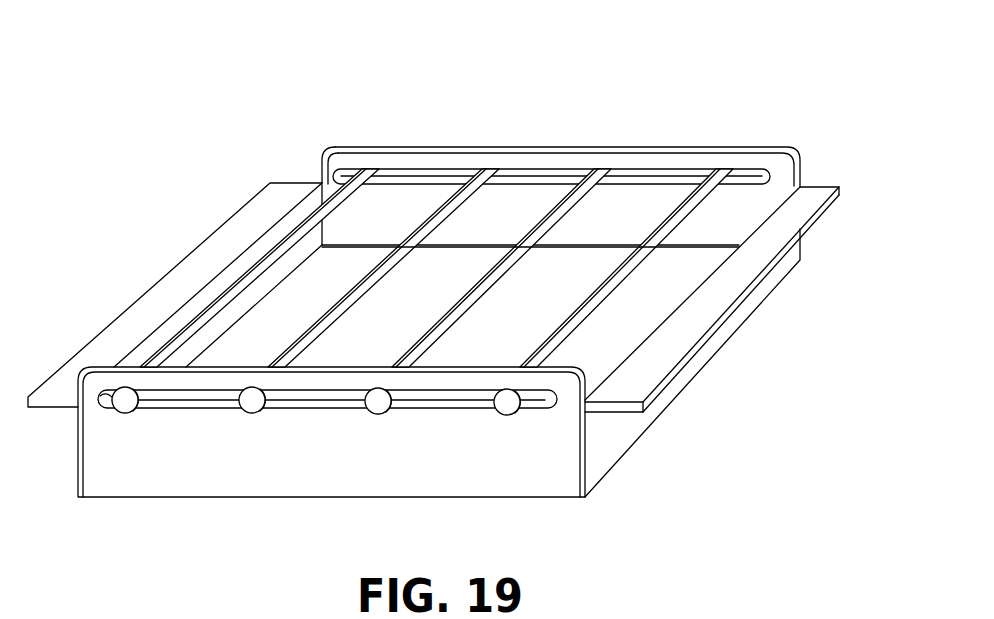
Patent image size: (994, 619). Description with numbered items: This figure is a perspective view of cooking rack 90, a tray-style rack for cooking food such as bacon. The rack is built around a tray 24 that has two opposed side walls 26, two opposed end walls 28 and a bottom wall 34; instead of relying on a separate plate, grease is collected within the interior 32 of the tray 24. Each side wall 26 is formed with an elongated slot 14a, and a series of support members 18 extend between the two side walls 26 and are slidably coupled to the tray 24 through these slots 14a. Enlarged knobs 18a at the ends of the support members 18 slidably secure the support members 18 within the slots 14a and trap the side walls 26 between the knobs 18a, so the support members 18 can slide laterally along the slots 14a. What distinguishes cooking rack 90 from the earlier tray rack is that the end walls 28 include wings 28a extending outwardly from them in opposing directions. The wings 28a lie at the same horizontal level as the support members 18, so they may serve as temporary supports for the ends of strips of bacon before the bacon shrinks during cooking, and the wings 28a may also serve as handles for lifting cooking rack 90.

The cooking rack 90 is at (650, 98).
The side wall 26 is at (660, 147).
The tray 24 is at (610, 437).
The end wall 28 is at (290, 226).
The wing 28a is at (147, 290).
The elongated slot 14a is at (630, 186).
The support member 18 is at (235, 295).
The knob 18a is at (125, 413).
The interior 32 is at (505, 205).
The bottom wall 34 is at (513, 352).